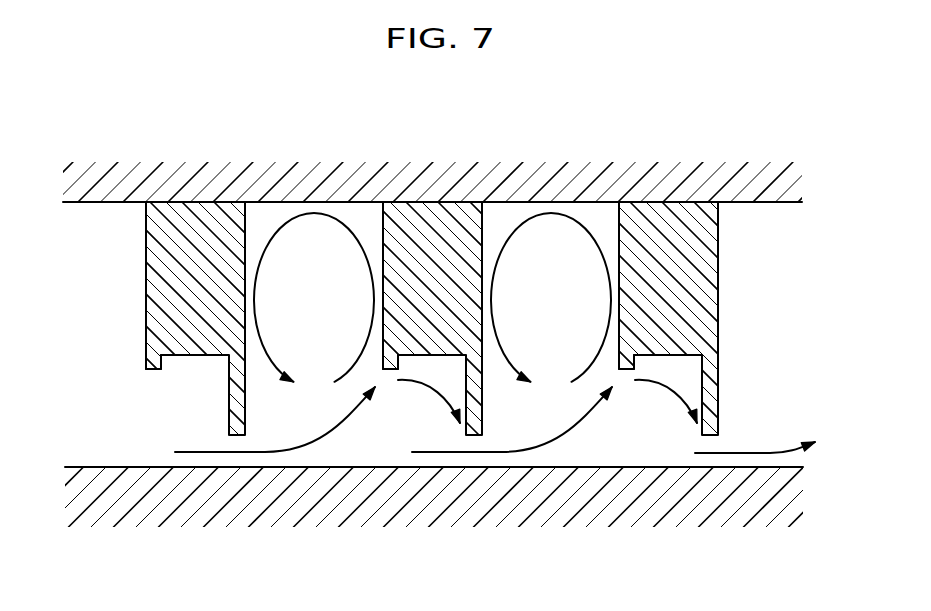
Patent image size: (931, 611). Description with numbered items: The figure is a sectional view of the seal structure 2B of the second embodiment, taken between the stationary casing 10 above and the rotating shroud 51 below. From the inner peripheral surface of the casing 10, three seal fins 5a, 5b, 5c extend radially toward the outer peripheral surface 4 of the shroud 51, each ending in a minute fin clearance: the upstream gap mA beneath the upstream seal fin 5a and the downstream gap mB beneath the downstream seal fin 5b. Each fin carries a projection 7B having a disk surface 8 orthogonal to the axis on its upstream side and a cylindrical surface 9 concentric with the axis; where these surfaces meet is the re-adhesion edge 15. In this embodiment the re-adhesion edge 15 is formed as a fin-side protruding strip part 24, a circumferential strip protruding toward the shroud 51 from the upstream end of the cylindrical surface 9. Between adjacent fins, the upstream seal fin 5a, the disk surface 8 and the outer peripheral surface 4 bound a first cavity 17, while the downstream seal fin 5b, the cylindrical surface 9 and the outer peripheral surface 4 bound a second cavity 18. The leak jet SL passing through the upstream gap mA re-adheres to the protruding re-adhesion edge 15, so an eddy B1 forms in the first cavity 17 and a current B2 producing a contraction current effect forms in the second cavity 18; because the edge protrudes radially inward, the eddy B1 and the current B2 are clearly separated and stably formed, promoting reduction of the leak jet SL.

The casing 10 is at (92, 196).
The shroud 51 is at (80, 473).
The projection 7B is at (190, 213).
The disk surface 8 is at (146, 263).
The seal structure 2B is at (118, 313).
The upstream seal fin 5a is at (245, 228).
The downstream seal fin 5b is at (482, 225).
The seal fin 5c is at (712, 263).
The first cavity 17 is at (340, 255).
The eddy B1 is at (258, 262).
The re-adhesion edge 15 is at (146, 372).
The fin-side protruding strip part 24 is at (158, 368).
The cylindrical surface 9 is at (195, 360).
The current B2 is at (418, 382).
The leak jet SL is at (278, 452).
The outer peripheral surface 4 is at (777, 467).
The upstream gap mA is at (228, 461).
The downstream gap mB is at (475, 461).
The second cavity 18 is at (440, 427).